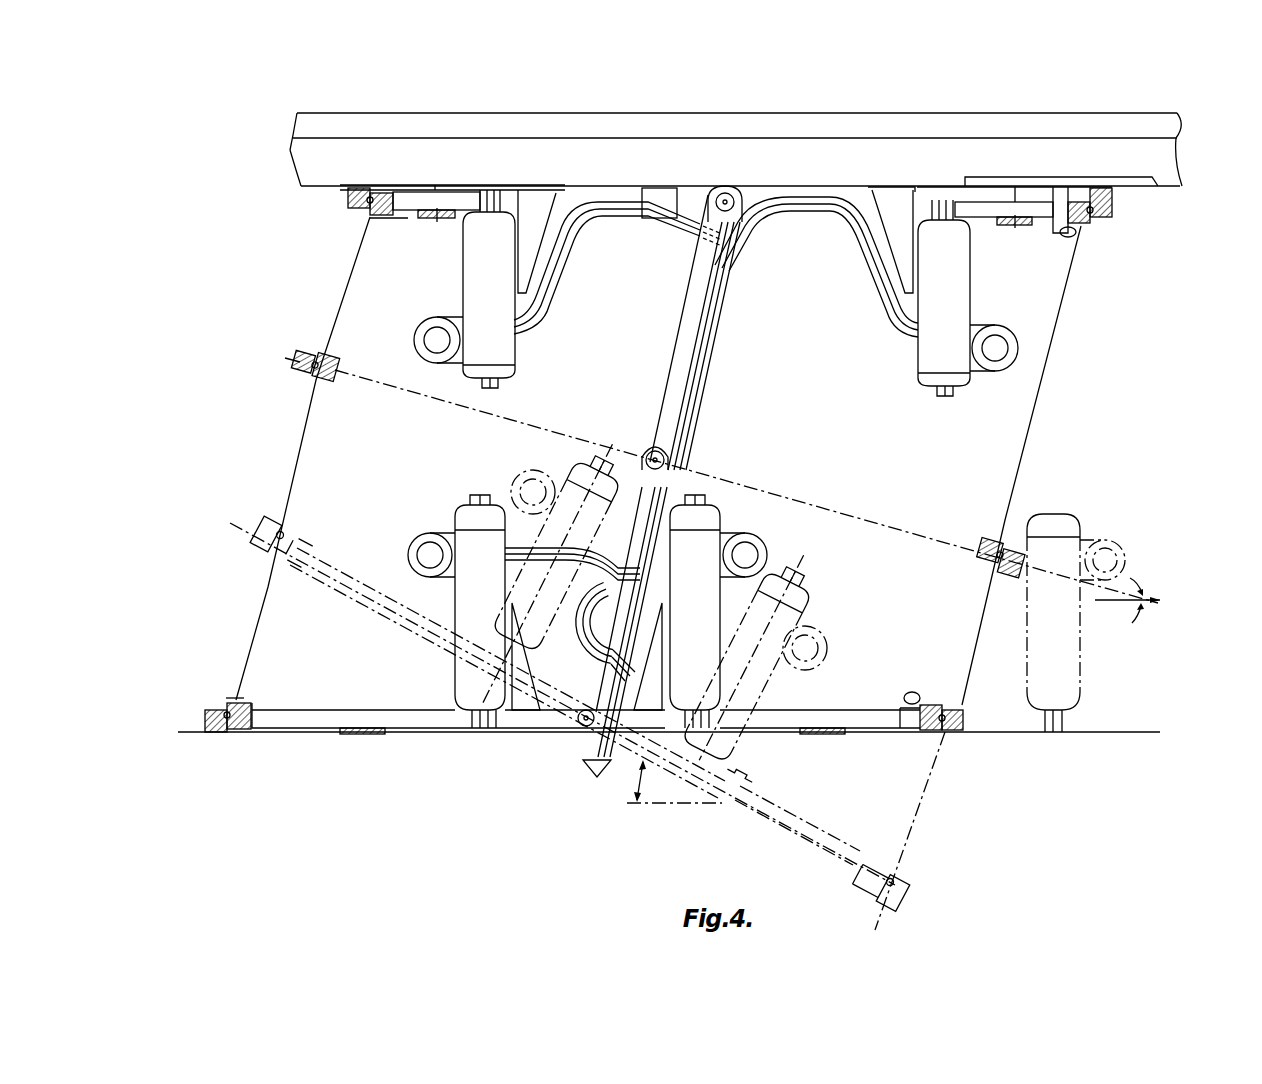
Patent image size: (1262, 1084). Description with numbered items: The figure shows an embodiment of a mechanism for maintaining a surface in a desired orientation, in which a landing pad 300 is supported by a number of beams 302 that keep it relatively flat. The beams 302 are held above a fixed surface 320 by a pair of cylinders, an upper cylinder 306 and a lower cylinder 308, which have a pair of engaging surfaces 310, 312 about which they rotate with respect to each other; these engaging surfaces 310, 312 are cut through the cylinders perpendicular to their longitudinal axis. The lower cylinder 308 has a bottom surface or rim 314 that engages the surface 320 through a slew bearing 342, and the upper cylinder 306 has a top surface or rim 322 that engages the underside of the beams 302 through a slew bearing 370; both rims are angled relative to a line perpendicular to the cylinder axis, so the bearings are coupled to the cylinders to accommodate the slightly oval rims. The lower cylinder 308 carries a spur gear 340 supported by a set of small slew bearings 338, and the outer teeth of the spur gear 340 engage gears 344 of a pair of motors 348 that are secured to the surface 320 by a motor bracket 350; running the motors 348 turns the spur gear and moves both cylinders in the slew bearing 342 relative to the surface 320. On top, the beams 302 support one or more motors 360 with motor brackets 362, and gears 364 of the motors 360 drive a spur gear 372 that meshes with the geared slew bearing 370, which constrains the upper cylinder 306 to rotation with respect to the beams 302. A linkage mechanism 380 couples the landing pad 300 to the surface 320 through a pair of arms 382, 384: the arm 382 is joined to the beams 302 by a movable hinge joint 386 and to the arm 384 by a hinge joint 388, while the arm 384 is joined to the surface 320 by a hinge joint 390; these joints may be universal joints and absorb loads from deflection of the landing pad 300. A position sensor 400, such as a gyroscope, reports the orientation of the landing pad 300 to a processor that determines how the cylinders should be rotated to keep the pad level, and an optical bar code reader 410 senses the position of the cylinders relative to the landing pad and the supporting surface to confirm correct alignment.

The landing pad 300 is at (1172, 113).
The beams 302 is at (1178, 160).
The upper cylinder 306 is at (1040, 395).
The lower cylinder 308 is at (985, 615).
The engaging surface 310 is at (895, 525).
The engaging surface 312 is at (977, 550).
The bottom surface or rim 314 is at (240, 698).
The surface 320 is at (1095, 717).
The top surface or rim 322 is at (598, 182).
The small slew bearings 338 is at (368, 736).
The spur gear 340 is at (316, 714).
The slew bearing 342 is at (214, 708).
The gears 344 is at (478, 735).
The motors 348 is at (496, 576).
The motor bracket 350 is at (528, 722).
The motors 360 is at (504, 306).
The motor brackets 362 is at (538, 215).
The gears 364 is at (485, 192).
The slew bearing 370 is at (356, 207).
The spur gear 372 is at (400, 190).
The linkage mechanism 380 is at (703, 440).
The arm 382 is at (706, 327).
The arm 384 is at (645, 485).
The hinge joint 386 is at (728, 200).
The hinge joint 388 is at (650, 450).
The hinge joint 390 is at (590, 735).
The position sensor 400 is at (663, 195).
The optical bar code reader 410 is at (1073, 232).